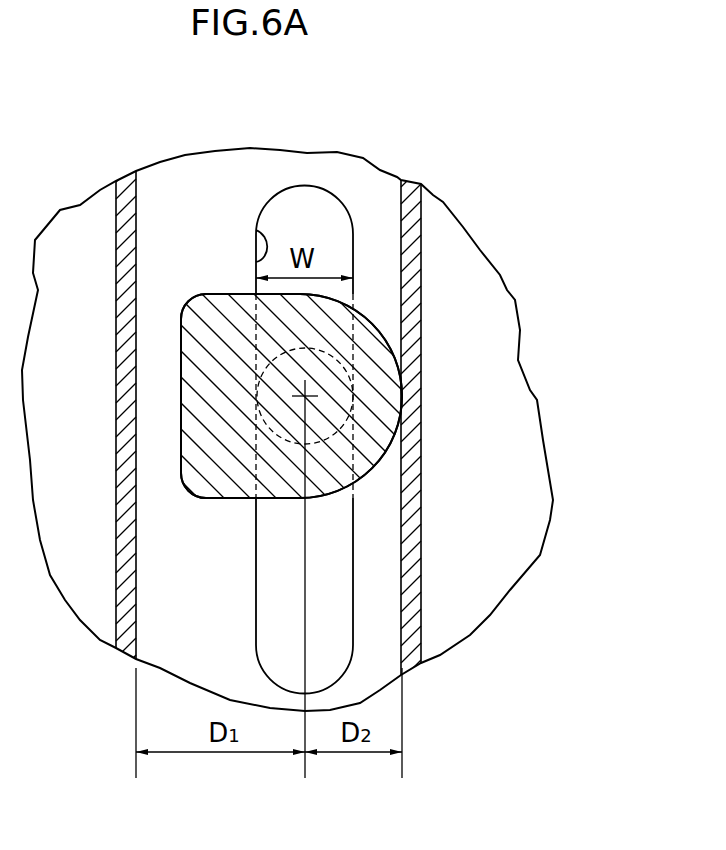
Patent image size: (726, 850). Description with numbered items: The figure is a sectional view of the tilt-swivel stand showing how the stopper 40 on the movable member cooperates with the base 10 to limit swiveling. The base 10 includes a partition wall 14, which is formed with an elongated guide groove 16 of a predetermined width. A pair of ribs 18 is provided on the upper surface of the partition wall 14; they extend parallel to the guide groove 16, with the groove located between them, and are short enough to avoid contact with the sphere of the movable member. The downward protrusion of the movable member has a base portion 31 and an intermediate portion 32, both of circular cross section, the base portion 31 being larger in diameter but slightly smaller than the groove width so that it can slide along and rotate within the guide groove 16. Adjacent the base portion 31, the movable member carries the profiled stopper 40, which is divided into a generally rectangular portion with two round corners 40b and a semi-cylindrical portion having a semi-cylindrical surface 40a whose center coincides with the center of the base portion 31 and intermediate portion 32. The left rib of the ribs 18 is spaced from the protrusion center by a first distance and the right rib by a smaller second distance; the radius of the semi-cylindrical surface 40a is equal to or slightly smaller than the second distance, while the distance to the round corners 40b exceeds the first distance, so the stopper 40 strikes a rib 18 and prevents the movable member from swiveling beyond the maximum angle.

The base 10 is at (470, 265).
The partition wall 14 is at (320, 175).
The guide groove 16 is at (256, 230).
The ribs 18 is at (116, 404).
The base portion 31 is at (353, 339).
The intermediate portion 32 is at (345, 377).
The stopper 40 is at (217, 503).
The semi-cylindrical surface 40a is at (372, 468).
The round corners 40b is at (195, 293).